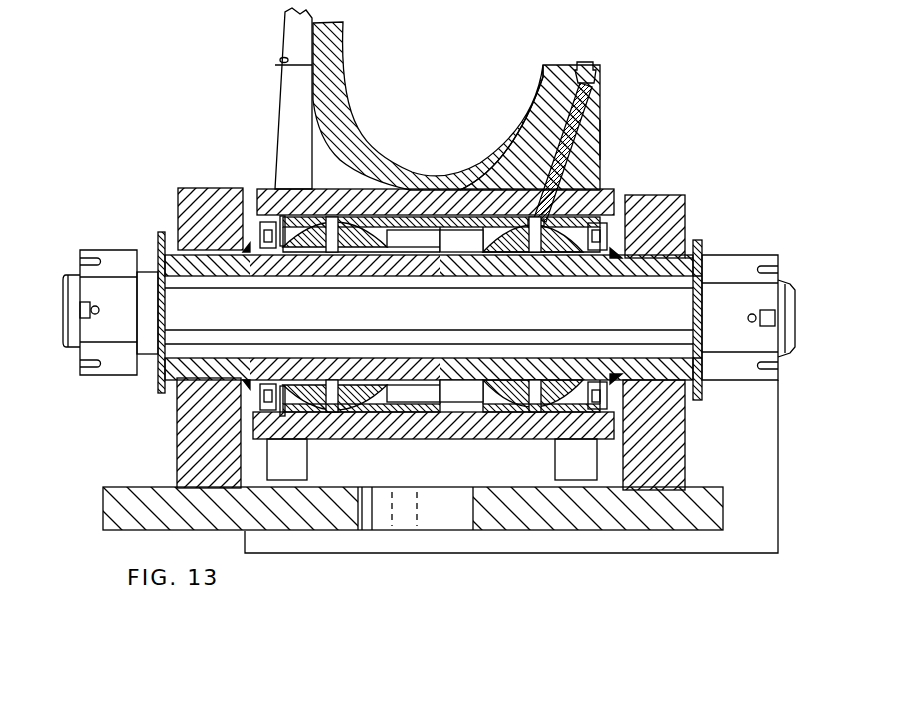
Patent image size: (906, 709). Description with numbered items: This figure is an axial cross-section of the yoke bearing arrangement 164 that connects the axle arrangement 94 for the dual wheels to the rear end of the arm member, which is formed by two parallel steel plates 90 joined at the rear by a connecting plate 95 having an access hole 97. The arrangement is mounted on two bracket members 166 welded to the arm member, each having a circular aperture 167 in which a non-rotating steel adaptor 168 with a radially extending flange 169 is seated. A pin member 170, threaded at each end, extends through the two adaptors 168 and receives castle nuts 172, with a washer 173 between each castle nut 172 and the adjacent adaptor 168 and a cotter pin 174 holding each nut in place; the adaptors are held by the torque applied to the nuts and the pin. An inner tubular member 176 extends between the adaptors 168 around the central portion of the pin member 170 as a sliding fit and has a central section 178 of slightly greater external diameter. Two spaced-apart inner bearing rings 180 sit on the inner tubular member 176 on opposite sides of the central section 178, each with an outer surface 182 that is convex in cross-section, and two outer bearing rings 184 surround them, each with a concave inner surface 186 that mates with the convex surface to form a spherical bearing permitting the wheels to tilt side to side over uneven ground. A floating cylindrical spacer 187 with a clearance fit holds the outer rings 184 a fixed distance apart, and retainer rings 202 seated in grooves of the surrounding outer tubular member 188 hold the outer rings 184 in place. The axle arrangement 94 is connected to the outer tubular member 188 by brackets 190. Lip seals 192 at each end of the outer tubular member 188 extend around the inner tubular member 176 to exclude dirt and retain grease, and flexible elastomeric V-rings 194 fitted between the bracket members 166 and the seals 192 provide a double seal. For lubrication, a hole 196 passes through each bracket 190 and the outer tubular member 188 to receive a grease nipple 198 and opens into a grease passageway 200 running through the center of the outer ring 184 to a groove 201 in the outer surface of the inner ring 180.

The steel plates 90 is at (595, 540).
The axle arrangement 94 is at (337, 47).
The connecting plate 95 is at (333, 520).
The access hole 97 is at (447, 520).
The yoke bearing arrangement 164 is at (618, 170).
The bracket members 166 is at (208, 203).
The circular apertures 167 is at (690, 230).
The steel adaptor 168 is at (152, 380).
The radially extending flange 169 is at (703, 393).
The pin member 170 is at (72, 278).
The castle nuts 172 is at (122, 260).
The washer 173 is at (145, 260).
The cotter pin 174 is at (103, 313).
The inner tubular member 176 is at (568, 268).
The central section 178 is at (432, 250).
The inner bearing rings 180 is at (509, 390).
The outer surface 182 is at (362, 225).
The outer bearing rings 184 is at (370, 405).
The inner surface 186 is at (310, 248).
The cylindrical spacer 187 is at (450, 403).
The outer tubular member 188 is at (505, 413).
The brackets 190 is at (283, 90).
The lip seals 192 is at (253, 222).
The V-rings 194 is at (620, 398).
The hole 196 is at (602, 140).
The grease nipple 198 is at (592, 68).
The grease passageway 200 is at (360, 223).
The groove 201 is at (322, 227).
The retainer rings 202 is at (316, 412).